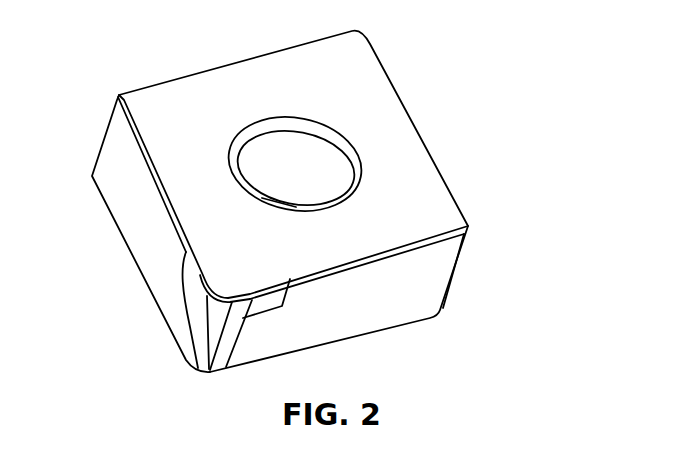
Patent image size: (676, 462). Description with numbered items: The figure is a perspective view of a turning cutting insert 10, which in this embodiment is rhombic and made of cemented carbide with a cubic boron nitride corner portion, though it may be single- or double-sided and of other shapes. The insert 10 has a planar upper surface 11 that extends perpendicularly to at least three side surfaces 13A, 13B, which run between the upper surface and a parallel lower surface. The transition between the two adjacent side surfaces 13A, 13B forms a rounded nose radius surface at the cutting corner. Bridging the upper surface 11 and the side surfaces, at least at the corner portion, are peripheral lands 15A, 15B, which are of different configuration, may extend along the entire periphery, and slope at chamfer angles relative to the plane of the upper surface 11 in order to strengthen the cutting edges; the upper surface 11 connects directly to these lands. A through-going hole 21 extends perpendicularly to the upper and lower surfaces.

The cutting insert 10 is at (440, 66).
The upper surface 11 is at (413, 190).
The side surface 13A is at (402, 297).
The side surface 13B is at (143, 238).
The peripheral land 15A is at (263, 285).
The peripheral land 15B is at (185, 254).
The through-going hole 21 is at (318, 158).